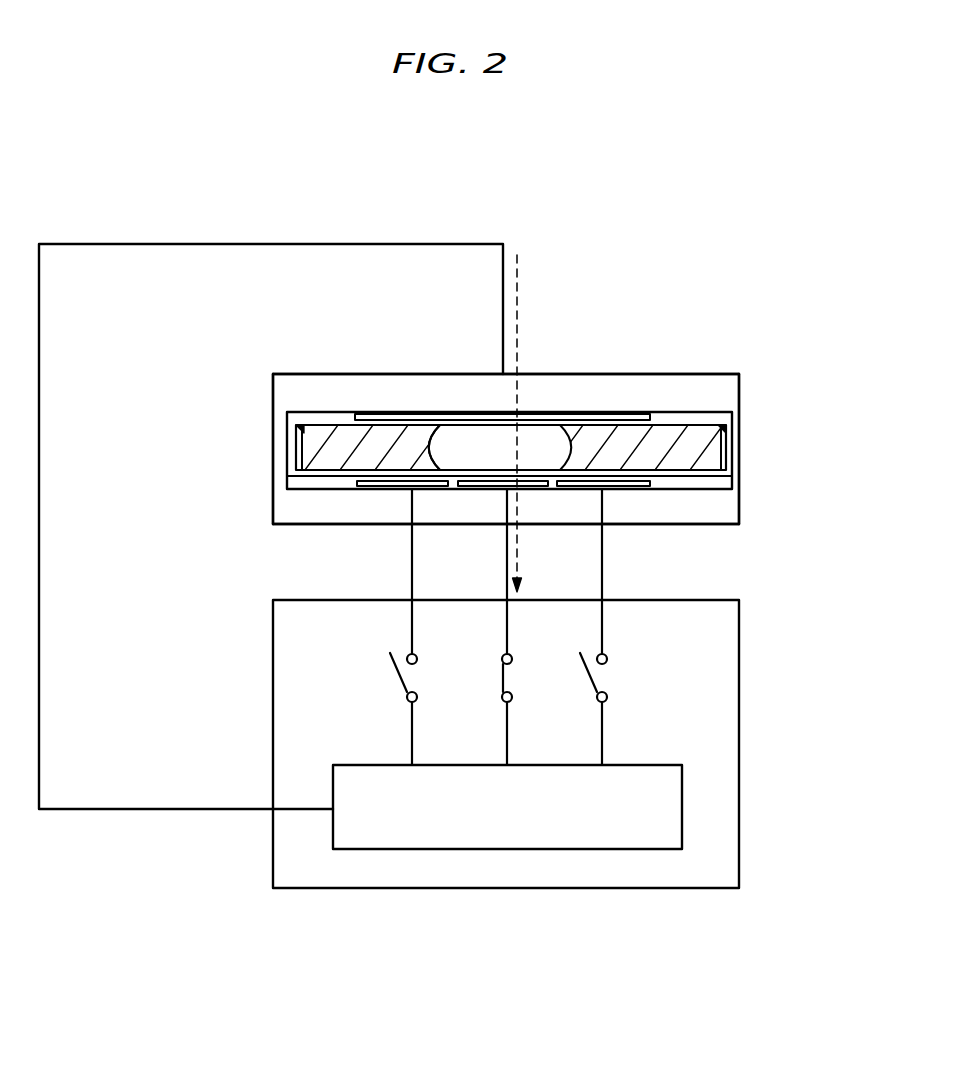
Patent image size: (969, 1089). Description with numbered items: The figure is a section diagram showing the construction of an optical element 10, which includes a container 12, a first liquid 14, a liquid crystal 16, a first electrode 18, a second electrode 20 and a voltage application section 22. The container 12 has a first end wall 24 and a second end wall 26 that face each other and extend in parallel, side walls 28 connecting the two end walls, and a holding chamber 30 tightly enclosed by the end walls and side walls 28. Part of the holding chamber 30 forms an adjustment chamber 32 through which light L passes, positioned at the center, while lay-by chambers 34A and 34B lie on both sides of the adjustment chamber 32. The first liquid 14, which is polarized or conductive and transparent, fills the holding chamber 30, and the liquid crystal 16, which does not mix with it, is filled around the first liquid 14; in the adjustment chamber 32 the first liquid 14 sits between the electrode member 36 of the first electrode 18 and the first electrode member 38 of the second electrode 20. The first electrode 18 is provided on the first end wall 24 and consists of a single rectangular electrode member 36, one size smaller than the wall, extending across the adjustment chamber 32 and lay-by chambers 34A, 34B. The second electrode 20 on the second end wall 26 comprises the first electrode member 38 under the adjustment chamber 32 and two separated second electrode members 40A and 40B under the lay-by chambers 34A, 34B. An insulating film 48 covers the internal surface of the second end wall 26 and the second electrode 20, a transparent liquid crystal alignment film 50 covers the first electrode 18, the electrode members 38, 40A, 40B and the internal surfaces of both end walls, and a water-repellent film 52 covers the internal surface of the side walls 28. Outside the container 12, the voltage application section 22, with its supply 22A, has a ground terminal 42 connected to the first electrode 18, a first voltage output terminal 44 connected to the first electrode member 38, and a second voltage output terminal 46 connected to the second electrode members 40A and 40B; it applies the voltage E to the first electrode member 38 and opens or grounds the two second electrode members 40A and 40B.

The optical element 10 is at (734, 232).
The container 12 is at (702, 357).
The first liquid 14 is at (577, 440).
The liquid crystal 16 is at (350, 435).
The first electrode 18 is at (475, 393).
The second electrode 20 is at (374, 517).
The voltage application section 22 is at (739, 640).
The power supply 22A is at (682, 785).
The first end wall 24 is at (657, 373).
The second end wall 26 is at (688, 527).
The side walls 28 is at (272, 462).
The holding chamber 30 is at (710, 434).
The adjustment chamber 32 is at (521, 440).
The lay-by chamber 34A is at (380, 435).
The lay-by chamber 34B is at (672, 430).
The electrode member 36 is at (433, 428).
The first electrode member 38 is at (533, 490).
The second electrode member 40A is at (425, 490).
The second electrode member 40B is at (625, 490).
The ground terminal 42 is at (272, 810).
The first voltage output terminal 44 is at (507, 578).
The second voltage output terminal 46 is at (412, 578).
The insulating film 48 is at (703, 488).
The liquid crystal alignment film 50 is at (655, 416).
The water-repellent film 52 is at (308, 418).
The light L is at (519, 257).
The voltage E is at (510, 738).